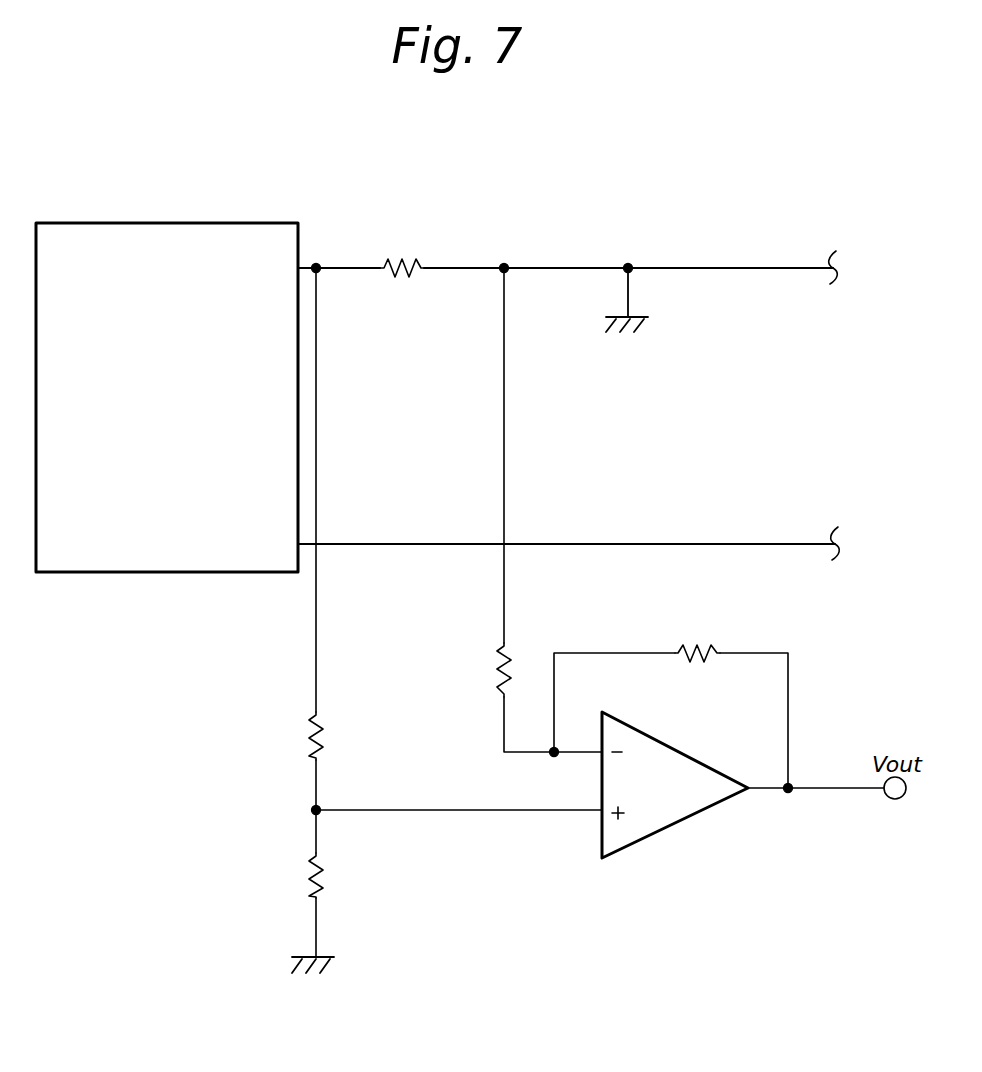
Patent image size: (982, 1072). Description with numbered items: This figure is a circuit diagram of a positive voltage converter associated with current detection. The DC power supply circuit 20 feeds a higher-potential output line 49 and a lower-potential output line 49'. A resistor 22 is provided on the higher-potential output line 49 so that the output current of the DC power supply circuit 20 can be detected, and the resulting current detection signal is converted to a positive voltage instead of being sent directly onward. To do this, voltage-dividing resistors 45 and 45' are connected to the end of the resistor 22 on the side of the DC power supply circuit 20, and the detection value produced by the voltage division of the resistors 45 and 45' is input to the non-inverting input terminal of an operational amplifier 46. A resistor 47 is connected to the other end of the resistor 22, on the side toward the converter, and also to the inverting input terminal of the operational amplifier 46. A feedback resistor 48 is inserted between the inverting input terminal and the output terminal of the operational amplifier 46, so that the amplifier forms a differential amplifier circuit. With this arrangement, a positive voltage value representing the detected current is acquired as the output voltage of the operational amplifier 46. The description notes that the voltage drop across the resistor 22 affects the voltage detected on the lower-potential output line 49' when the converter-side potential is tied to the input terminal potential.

The DC power supply circuit 20 is at (250, 222).
The resistor 22 is at (408, 260).
The output line 49 is at (630, 248).
The lower-potential output line 49' is at (568, 518).
The resistor 47 is at (497, 665).
The feedback resistor 48 is at (706, 647).
The operational amplifier 46 is at (680, 824).
The voltage-dividing resistor 45 is at (358, 736).
The voltage-dividing resistor 45' is at (364, 869).